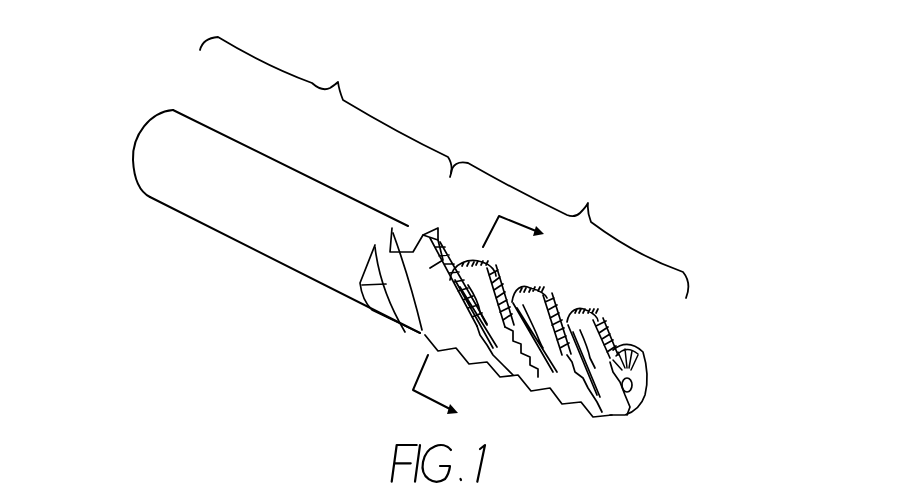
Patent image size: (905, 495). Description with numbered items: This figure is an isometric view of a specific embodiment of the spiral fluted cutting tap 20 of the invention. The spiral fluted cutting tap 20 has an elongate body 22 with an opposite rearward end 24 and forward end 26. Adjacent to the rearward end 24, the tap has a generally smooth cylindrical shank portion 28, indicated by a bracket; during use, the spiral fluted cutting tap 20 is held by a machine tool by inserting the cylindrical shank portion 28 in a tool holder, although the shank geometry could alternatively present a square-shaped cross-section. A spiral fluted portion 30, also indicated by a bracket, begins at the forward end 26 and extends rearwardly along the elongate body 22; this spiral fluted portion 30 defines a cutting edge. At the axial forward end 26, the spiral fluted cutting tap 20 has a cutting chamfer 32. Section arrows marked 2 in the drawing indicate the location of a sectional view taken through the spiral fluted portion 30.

The spiral fluted cutting tap 20 is at (549, 136).
The elongate body 22 is at (252, 237).
The rearward end 24 is at (145, 129).
The forward end 26 is at (626, 400).
The cylindrical shank portion 28 is at (326, 107).
The spiral fluted portion 30 is at (546, 289).
The cutting chamfer 32 is at (614, 350).
The section line for FIG. 2 is at (487, 325).